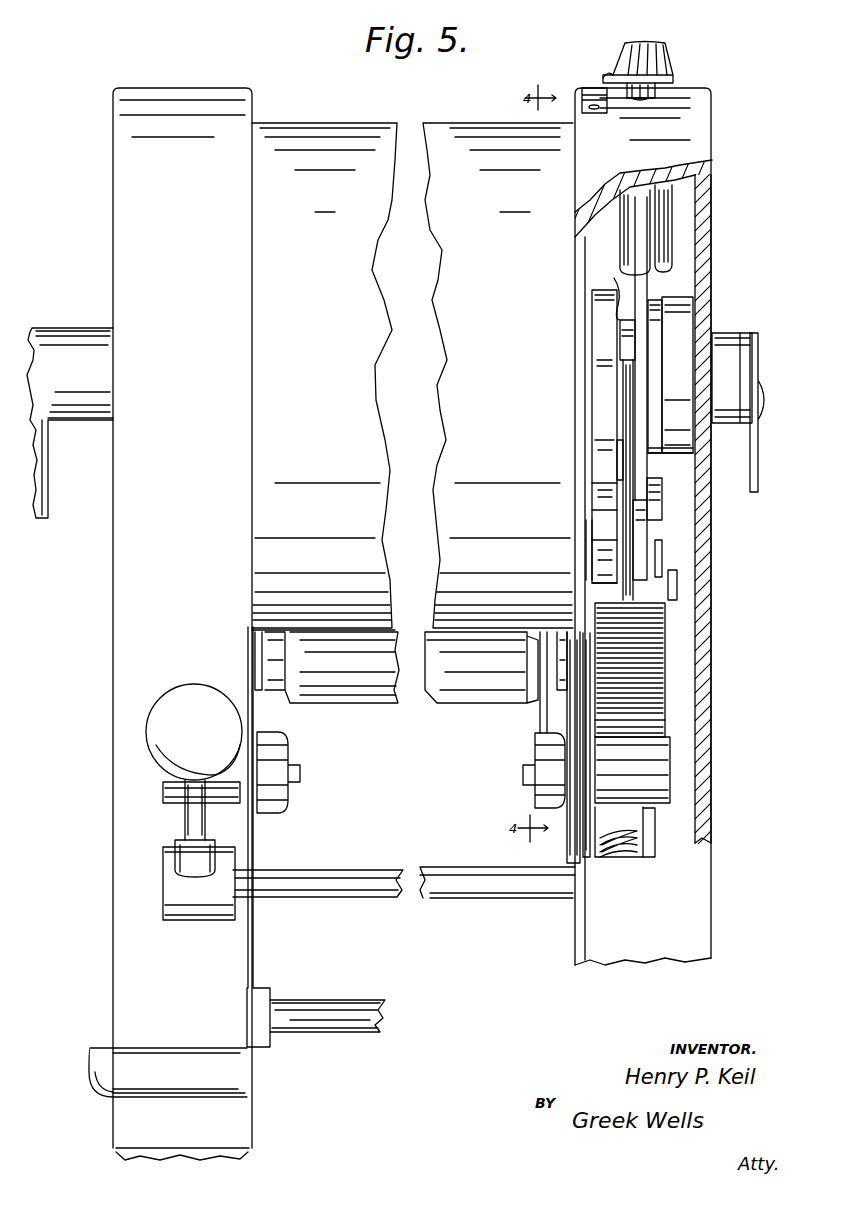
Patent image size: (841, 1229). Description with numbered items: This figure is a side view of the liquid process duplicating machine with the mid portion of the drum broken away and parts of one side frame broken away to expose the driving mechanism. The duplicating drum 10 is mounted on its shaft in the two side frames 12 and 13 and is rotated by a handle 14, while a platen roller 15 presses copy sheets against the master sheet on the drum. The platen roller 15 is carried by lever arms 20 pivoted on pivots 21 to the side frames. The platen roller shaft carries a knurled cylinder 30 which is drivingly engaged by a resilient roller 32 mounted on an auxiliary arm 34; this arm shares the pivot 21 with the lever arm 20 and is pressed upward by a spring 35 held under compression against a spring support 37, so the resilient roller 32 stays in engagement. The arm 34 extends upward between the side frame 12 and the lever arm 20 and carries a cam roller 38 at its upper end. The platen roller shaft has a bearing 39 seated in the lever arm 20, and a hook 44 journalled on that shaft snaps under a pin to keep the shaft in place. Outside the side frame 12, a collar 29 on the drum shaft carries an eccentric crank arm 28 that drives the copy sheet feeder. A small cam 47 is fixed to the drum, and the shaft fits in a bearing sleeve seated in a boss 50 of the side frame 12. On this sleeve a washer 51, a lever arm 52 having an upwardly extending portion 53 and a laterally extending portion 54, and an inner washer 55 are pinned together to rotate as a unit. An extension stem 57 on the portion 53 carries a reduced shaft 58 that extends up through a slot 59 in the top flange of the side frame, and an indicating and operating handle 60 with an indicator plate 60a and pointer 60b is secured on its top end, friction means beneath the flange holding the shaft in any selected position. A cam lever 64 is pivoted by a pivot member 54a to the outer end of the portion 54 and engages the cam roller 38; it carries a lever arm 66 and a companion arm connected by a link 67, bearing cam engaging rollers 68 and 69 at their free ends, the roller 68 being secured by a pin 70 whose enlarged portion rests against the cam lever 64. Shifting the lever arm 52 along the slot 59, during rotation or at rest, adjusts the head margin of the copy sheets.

The duplicating drum 10 is at (336, 383).
The side frame 12 is at (711, 272).
The side frame 13 is at (175, 576).
The handle 14 is at (58, 340).
The platen roller 15 is at (374, 705).
The lever arm 20 is at (255, 859).
The pivot 21 is at (292, 782).
The crank arm 28 is at (760, 480).
The collar 29 is at (740, 333).
The knurled cylinder 30 is at (668, 655).
The resilient roller 32 is at (668, 725).
The auxiliary arm 34 is at (670, 766).
The spring 35 is at (625, 858).
The spring support 37 is at (648, 845).
The cam roller 38 is at (711, 513).
The bearing 39 is at (570, 648).
The hook 44 is at (548, 720).
The cam 47 is at (588, 310).
The boss 50 is at (678, 300).
The washer 51 is at (662, 452).
The lever arm 52 is at (655, 345).
The upwardly extending portion 53 is at (640, 235).
The laterally extending portion 54 is at (665, 490).
The pivot member 54a is at (612, 458).
The washer 55 is at (615, 315).
The extension stem 57 is at (668, 225).
The reduced shaft 58 is at (648, 93).
The slot 59 is at (634, 100).
The indicating and operating handle 60 is at (672, 55).
The indicator plate 60a is at (586, 92).
The pointer 60b is at (605, 78).
The cam lever 64 is at (627, 397).
The lever arm 66 is at (660, 550).
The link 67 is at (650, 530).
The cam engaging roller 68 is at (600, 553).
The cam engaging roller 69 is at (605, 495).
The pin 70 is at (588, 528).